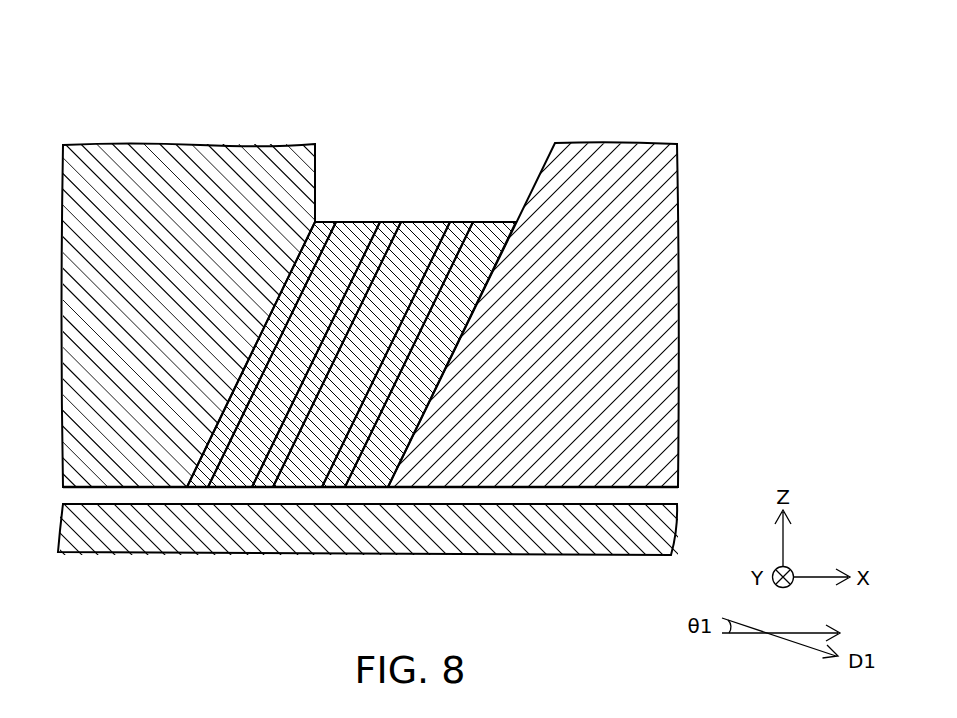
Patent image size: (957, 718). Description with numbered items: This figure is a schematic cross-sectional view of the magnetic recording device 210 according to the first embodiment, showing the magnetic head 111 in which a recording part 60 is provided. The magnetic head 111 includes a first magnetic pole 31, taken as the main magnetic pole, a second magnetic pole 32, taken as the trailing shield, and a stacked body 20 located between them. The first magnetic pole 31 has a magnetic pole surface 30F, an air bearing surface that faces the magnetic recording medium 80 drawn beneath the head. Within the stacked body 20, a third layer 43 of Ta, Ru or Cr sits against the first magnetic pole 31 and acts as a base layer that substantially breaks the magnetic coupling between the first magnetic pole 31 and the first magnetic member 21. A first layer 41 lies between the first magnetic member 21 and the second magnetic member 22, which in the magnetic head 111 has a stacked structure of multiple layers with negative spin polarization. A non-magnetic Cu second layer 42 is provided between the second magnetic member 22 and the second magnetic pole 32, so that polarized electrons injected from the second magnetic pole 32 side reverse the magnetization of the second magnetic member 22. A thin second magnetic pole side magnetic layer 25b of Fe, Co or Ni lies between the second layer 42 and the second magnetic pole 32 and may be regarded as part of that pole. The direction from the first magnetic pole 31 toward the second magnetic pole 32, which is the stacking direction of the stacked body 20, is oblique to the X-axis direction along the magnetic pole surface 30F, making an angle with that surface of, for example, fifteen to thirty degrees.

The first magnetic pole 31 is at (193, 177).
The second magnetic pole 32 is at (606, 173).
The stacked body 20 is at (478, 359).
The third layer 43 is at (316, 244).
The first magnetic member 21 is at (350, 248).
The first layer 41 is at (386, 247).
The second magnetic member 22 is at (416, 249).
The second layer 42 is at (452, 247).
The second magnetic pole side magnetic layer 25b is at (322, 137).
The magnetic pole surface 30F is at (82, 488).
The magnetic recording medium 80 is at (590, 533).
The magnetic head 111 is at (695, 108).
The magnetic recording device 210 is at (780, 86).
The recording part 60 is at (712, 160).